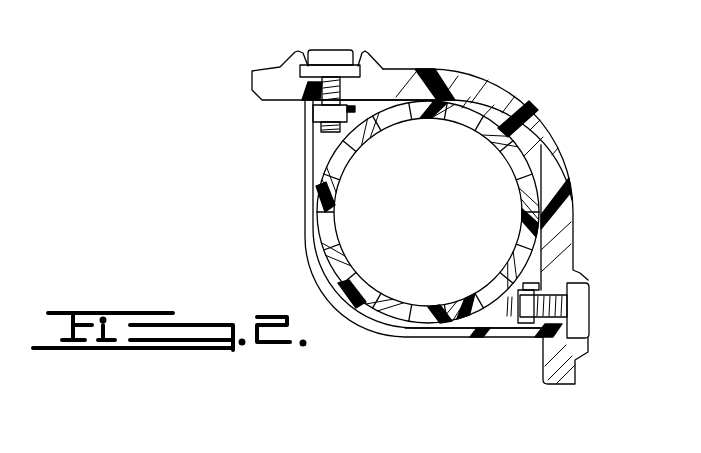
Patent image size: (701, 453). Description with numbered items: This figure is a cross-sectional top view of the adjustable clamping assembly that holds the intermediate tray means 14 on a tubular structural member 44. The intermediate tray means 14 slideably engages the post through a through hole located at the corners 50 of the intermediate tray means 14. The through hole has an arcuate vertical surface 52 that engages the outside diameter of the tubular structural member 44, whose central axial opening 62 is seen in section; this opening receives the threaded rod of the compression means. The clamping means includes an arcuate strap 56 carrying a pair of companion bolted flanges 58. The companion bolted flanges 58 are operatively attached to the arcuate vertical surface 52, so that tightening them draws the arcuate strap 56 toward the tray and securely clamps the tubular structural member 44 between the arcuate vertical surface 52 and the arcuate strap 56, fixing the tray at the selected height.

The intermediate tray means 14 is at (262, 70).
The tubular structural member 44 is at (412, 322).
The corners 50 is at (577, 208).
The arcuate vertical surface 52 is at (550, 120).
The arcuate strap 56 is at (323, 265).
The companion bolted flanges 58 is at (382, 92).
The axial opening 62 is at (462, 152).